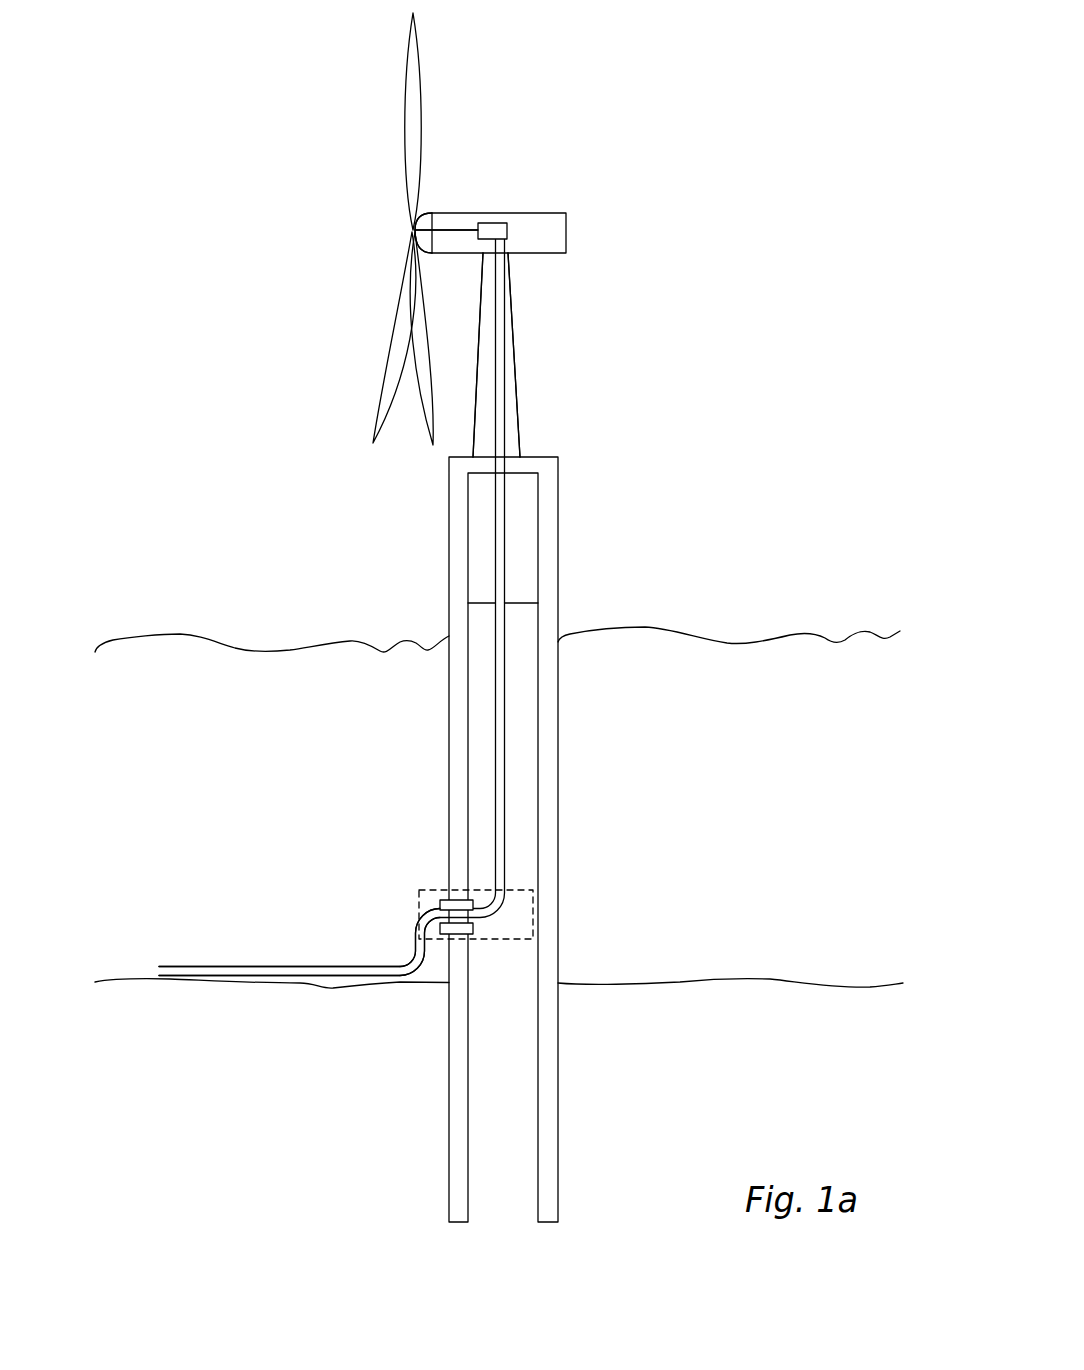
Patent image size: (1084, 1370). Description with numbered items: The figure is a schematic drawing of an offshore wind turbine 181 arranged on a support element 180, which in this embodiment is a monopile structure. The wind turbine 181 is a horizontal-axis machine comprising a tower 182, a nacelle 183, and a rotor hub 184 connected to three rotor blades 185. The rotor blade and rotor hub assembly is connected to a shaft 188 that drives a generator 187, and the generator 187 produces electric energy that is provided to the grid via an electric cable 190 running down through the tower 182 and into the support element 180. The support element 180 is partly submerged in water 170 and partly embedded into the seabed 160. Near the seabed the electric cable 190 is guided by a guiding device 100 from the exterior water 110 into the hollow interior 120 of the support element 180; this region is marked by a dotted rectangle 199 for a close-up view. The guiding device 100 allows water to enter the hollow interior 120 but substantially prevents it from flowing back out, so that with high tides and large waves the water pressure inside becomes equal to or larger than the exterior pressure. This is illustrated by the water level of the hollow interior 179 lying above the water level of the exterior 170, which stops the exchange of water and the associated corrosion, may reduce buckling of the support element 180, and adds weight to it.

The guiding device 100 is at (396, 909).
The exterior water 110 is at (377, 839).
The hollow interior 120 is at (532, 969).
The seabed 160 is at (763, 982).
The water 170 is at (750, 643).
The water level of the hollow interior 179 is at (496, 603).
The support element 180 is at (449, 765).
The offshore wind turbine 181 is at (688, 143).
The tower 182 is at (516, 372).
The nacelle 183 is at (480, 212).
The rotor hub 184 is at (422, 215).
The rotor blades 185 is at (404, 120).
The generator 187 is at (508, 230).
The shaft 188 is at (442, 230).
The electric cable 190 is at (496, 707).
The dotted rectangle 199 is at (433, 891).